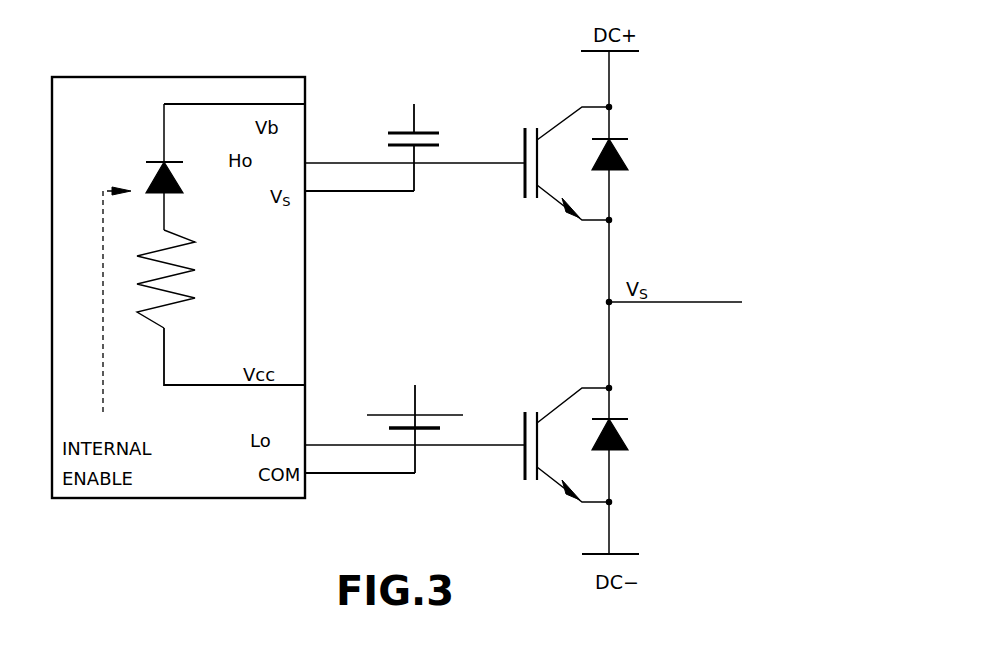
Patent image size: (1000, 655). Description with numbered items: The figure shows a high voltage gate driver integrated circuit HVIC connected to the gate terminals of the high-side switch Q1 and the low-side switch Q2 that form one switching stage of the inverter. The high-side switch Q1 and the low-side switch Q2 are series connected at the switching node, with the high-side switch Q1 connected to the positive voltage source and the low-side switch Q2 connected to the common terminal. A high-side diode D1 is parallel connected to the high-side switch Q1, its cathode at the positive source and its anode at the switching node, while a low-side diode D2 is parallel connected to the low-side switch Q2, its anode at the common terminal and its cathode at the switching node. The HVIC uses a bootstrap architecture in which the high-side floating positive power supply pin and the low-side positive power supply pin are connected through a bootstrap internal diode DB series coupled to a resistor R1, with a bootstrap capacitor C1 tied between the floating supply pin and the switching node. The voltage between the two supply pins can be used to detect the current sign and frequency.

The high voltage gate driver integrated circuit HVIC is at (156, 77).
The bootstrap internal diode structure diode DB is at (152, 160).
The resistor R1 is at (182, 279).
The bootstrap capacitor C1 is at (425, 134).
The high-side switch Q1 is at (568, 156).
The high-side diode D1 is at (626, 163).
The low-side switch Q2 is at (568, 438).
The low-side diode D2 is at (627, 445).